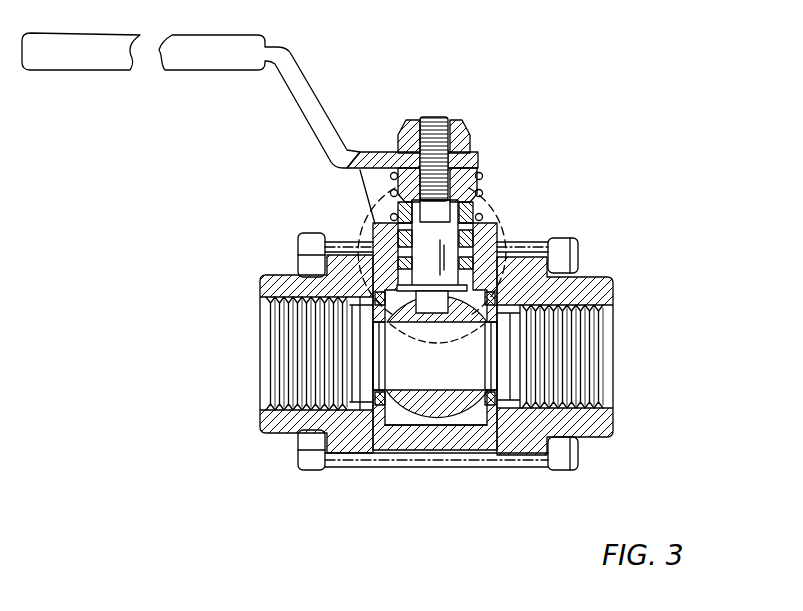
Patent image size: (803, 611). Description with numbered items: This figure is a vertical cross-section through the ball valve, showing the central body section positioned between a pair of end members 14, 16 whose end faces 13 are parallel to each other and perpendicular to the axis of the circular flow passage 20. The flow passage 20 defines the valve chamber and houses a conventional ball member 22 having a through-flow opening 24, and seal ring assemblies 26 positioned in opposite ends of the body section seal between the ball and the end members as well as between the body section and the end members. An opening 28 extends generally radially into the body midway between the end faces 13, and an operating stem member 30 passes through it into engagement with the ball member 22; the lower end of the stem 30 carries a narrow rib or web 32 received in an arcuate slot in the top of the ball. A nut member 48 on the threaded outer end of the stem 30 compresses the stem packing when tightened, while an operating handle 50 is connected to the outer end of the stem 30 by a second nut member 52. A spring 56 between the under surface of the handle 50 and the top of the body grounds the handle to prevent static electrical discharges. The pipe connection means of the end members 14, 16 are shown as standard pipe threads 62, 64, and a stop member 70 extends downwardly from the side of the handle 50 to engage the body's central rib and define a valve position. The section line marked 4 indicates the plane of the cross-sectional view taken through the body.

The section line 4- 4 is at (440, 78).
The end faces 13 is at (372, 446).
The end member 14 is at (270, 462).
The end member 16 is at (640, 443).
The flow passage 20 is at (463, 420).
The ball member 22 is at (432, 412).
The through-flow opening 24 is at (438, 393).
The seal ring assemblies 26 is at (343, 483).
The opening 28 is at (487, 228).
The operating stem member 30 is at (437, 117).
The rib or web 32 is at (434, 300).
The nut member 48 is at (477, 191).
The operating handle 50 is at (305, 85).
The nut member 52 is at (462, 139).
The spring 56 is at (480, 173).
The pipe threads 62 is at (265, 306).
The pipe threads 64 is at (603, 310).
The stop member 70 is at (372, 192).